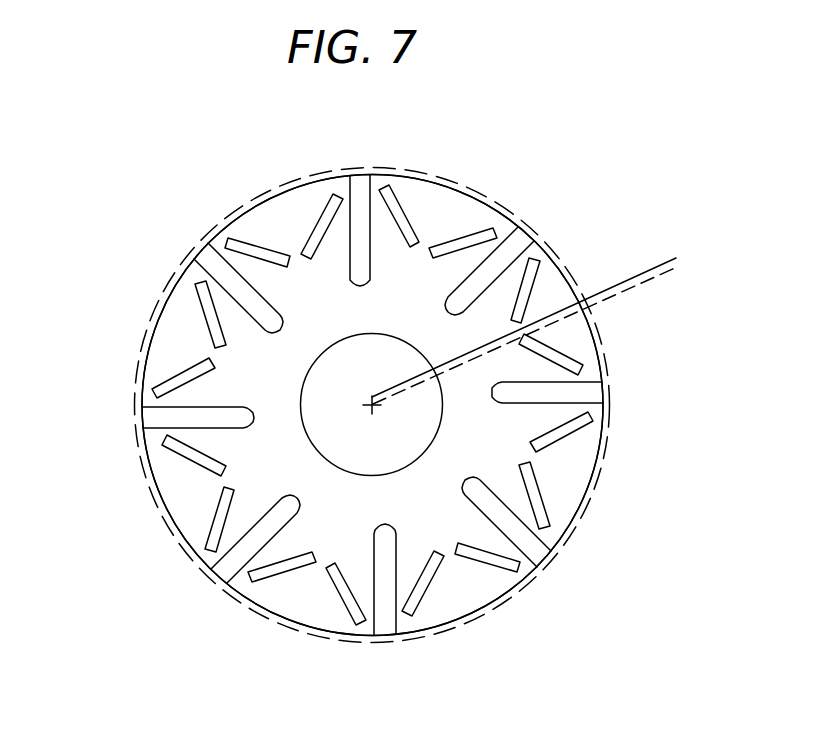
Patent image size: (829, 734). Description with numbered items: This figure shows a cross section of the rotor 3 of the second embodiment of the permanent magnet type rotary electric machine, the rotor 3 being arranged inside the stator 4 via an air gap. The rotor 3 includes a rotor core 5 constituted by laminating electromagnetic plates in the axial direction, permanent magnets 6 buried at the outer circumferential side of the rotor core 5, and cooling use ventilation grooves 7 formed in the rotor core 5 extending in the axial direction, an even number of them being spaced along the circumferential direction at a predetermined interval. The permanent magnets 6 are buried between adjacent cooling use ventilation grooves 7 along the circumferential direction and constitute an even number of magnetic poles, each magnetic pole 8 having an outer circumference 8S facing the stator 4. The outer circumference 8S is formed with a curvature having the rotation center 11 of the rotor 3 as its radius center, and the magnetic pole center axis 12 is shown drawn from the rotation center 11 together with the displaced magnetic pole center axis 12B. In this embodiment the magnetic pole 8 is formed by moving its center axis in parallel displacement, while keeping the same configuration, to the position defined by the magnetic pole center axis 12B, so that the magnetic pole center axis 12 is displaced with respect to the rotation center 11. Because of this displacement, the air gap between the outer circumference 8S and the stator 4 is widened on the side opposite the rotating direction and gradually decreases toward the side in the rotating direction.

The rotor 3 is at (242, 138).
The stator 4 is at (230, 602).
The rotor core 5 is at (247, 377).
The permanent magnets 6 is at (345, 595).
The cooling use ventilation grooves 7 is at (387, 590).
The magnetic pole 8 is at (188, 517).
The outer circumference 8S is at (158, 480).
The rotation center 11 is at (375, 407).
The magnetic pole center axis 12 is at (650, 280).
The magnetic pole center axis 12B is at (649, 273).